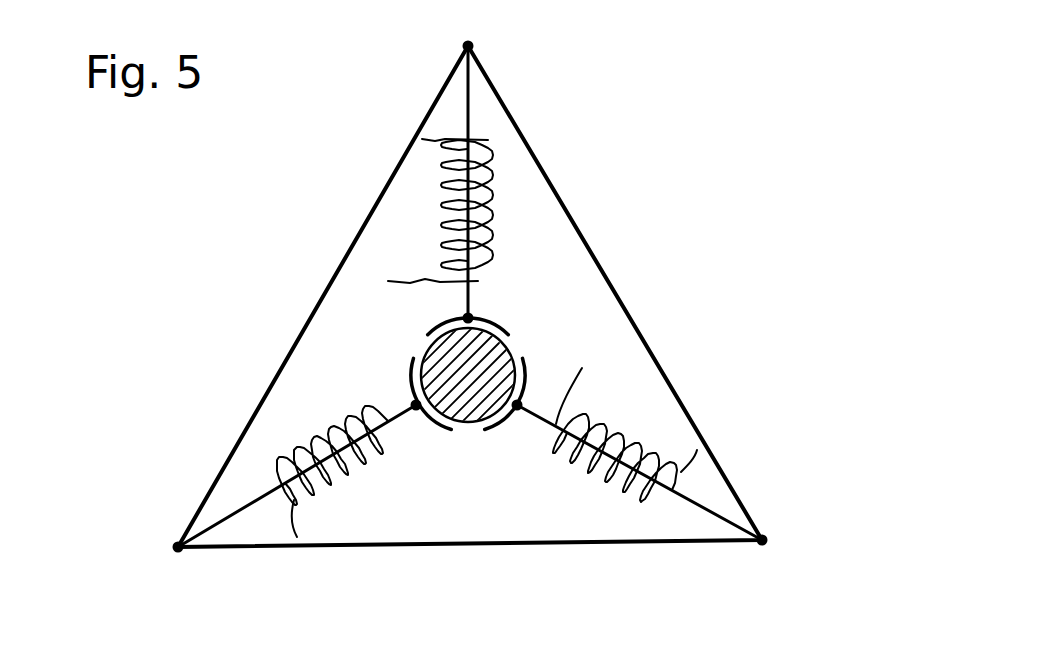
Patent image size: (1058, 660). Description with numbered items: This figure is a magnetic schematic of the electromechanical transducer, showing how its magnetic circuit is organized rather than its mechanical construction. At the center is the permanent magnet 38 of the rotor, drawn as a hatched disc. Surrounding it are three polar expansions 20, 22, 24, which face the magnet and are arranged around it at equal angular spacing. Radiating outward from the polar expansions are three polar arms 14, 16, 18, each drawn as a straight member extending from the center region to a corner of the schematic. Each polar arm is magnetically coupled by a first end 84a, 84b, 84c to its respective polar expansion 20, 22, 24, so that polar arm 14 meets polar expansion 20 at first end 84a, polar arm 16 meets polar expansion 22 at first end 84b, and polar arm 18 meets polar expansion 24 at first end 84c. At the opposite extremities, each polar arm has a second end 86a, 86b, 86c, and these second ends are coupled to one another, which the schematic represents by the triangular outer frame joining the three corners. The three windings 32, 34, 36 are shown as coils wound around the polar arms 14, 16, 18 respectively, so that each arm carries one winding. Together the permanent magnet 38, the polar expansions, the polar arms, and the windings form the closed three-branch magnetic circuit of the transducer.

The polar arm 14 is at (470, 115).
The polar arm 16 is at (242, 508).
The polar arm 18 is at (700, 500).
The polar expansion 20 is at (497, 322).
The polar expansion 22 is at (414, 404).
The polar expansion 24 is at (519, 406).
The winding 32 is at (493, 203).
The winding 34 is at (342, 482).
The winding 36 is at (623, 430).
The permanent magnet 38 is at (466, 395).
The first end 84a is at (467, 318).
The first end 84b is at (415, 412).
The first end 84c is at (530, 362).
The second end 86a is at (468, 46).
The second end 86b is at (178, 547).
The second end 86c is at (762, 540).